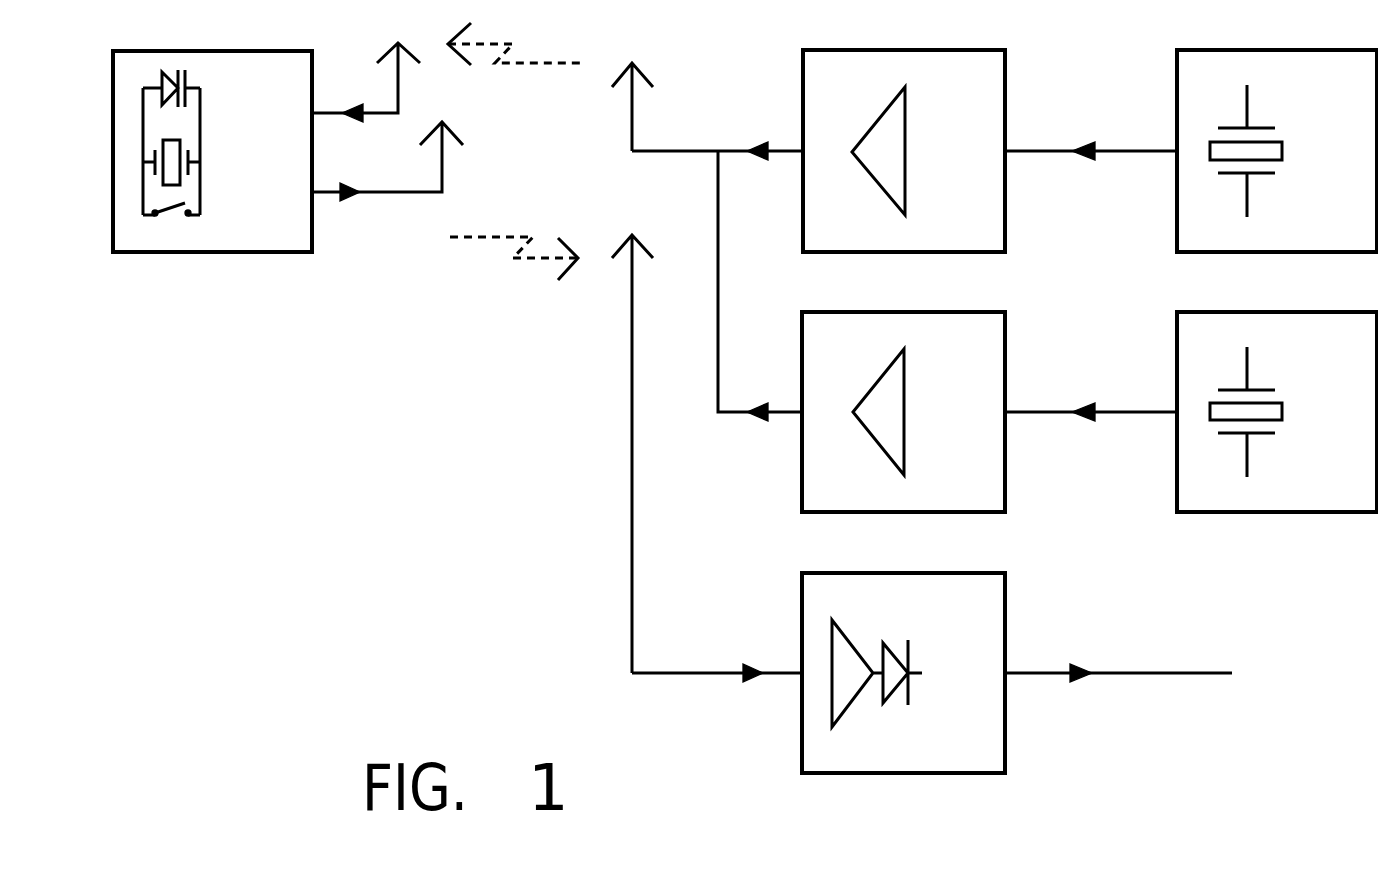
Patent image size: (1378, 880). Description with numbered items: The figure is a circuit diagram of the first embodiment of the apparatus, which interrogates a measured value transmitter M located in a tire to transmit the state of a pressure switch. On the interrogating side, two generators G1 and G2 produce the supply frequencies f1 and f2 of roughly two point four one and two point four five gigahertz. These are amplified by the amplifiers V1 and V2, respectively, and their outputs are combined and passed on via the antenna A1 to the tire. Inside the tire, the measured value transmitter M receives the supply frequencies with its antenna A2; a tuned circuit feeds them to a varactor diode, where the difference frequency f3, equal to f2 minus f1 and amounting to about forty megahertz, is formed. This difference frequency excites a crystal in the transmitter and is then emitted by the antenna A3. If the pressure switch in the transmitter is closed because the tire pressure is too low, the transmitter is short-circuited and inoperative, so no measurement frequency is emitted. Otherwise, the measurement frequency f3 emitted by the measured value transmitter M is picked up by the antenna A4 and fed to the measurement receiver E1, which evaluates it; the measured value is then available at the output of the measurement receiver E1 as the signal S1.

The measured value transmitter M is at (212, 151).
The antenna A1 is at (623, 107).
The antenna A2 is at (376, 82).
The antenna A3 is at (396, 161).
The antenna A4 is at (622, 454).
The amplifier V1 is at (904, 151).
The amplifier V2 is at (903, 412).
The generator G1 is at (1277, 151).
The generator G2 is at (1277, 412).
The measurement receiver E1 is at (903, 673).
The signal S1 is at (1137, 678).
The supply frequency f1 is at (904, 129).
The supply frequency f2 is at (947, 286).
The measurement frequency f3 is at (717, 653).